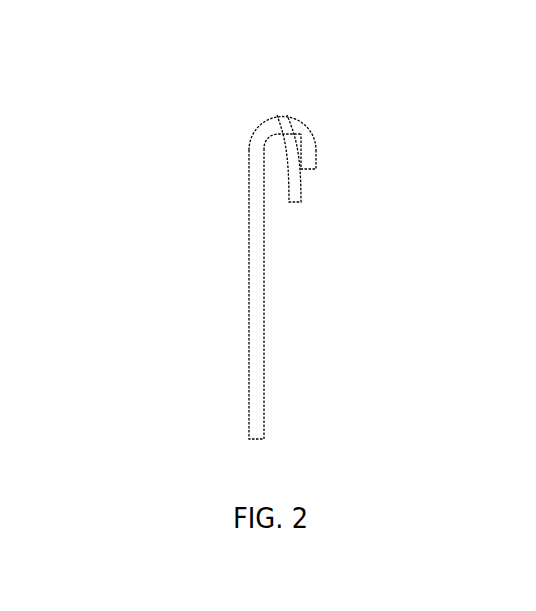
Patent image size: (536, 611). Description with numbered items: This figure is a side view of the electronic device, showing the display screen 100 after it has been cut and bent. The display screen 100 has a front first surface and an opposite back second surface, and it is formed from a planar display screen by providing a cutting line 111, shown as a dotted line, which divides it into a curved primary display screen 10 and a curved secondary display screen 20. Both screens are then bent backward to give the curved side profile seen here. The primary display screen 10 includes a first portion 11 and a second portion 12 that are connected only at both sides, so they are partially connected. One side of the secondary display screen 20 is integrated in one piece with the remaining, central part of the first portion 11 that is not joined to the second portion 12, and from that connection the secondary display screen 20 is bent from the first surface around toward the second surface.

The display screen 100 is at (187, 110).
The primary display screen 10 is at (249, 275).
The first portion 11 is at (258, 325).
The cutting line 111 is at (278, 130).
The second portion 12 is at (308, 147).
The secondary display screen 20 is at (293, 190).